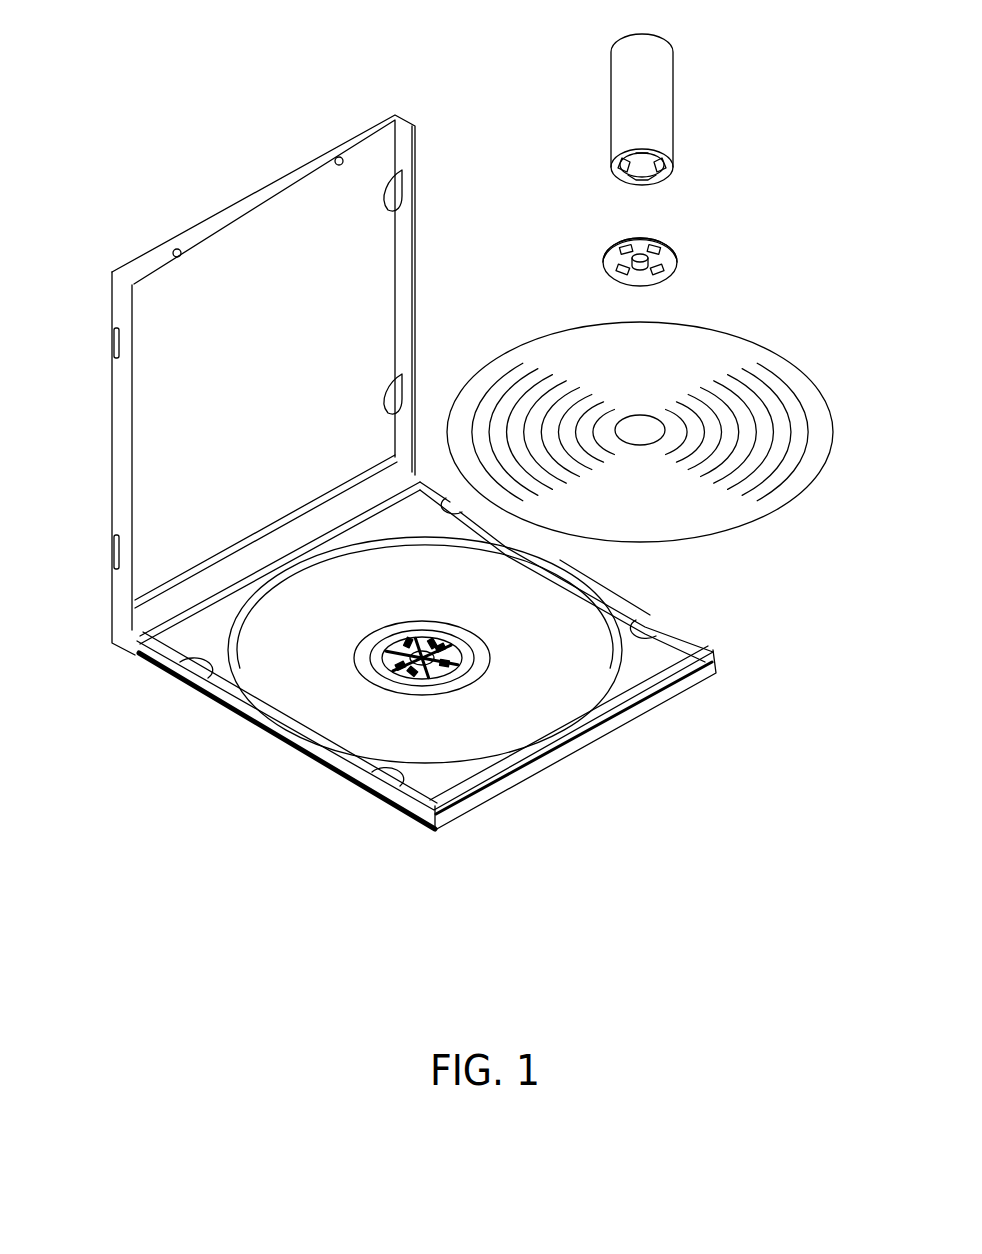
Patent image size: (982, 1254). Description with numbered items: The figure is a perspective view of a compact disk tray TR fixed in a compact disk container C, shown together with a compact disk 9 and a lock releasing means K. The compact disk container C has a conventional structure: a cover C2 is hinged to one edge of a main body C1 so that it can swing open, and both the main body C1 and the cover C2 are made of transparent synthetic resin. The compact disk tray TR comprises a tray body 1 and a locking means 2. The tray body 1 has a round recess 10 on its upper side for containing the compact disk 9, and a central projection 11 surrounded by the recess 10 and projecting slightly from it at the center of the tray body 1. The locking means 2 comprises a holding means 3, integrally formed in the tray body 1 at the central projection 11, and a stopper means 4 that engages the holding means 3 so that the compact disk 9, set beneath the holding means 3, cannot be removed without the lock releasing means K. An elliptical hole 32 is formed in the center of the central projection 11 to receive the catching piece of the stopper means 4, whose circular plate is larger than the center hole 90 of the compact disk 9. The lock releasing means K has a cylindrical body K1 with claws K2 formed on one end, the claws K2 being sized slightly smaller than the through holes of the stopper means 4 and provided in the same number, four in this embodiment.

The compact disk tray TR is at (563, 58).
The tray body 1 is at (367, 620).
The locking means 2 is at (580, 134).
The holding means 3 is at (423, 632).
The stopper means 4 is at (608, 250).
The compact disk 9 is at (802, 386).
The center hole 90 is at (640, 432).
The round recess 10 is at (592, 672).
The central projection 11 is at (463, 660).
The elliptical hole 32 is at (462, 638).
The lock releasing means K is at (790, 52).
The cylindrical body K1 is at (652, 90).
The claws K2 is at (662, 155).
The compact disk container C is at (198, 805).
The main body C1 is at (163, 660).
The cover C2 is at (118, 498).